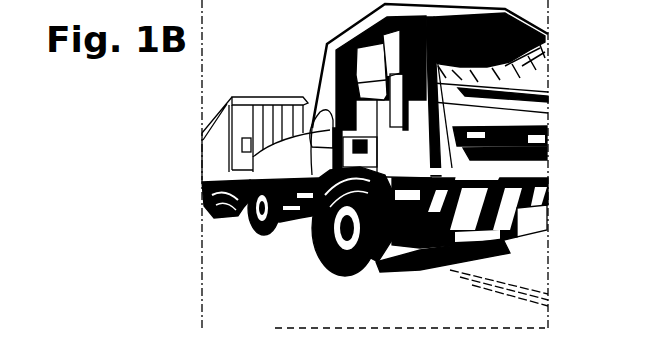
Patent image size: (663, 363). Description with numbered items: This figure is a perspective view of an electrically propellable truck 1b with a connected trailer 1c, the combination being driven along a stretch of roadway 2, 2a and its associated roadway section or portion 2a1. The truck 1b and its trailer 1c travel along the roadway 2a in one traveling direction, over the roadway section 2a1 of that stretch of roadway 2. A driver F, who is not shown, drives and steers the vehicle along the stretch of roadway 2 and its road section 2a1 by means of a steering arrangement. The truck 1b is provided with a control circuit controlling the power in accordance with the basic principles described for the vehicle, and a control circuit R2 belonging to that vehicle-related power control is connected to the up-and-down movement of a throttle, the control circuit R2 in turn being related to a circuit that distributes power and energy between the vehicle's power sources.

The truck 1b is at (357, 23).
The trailer 1c is at (265, 100).
The driver F is at (537, 63).
The stretch of roadway 2 is at (272, 279).
The control circuit R2 is at (317, 266).
The roadway in one traveling direction 2a is at (546, 278).
The roadway section in one traveling direction 2a1 is at (495, 290).